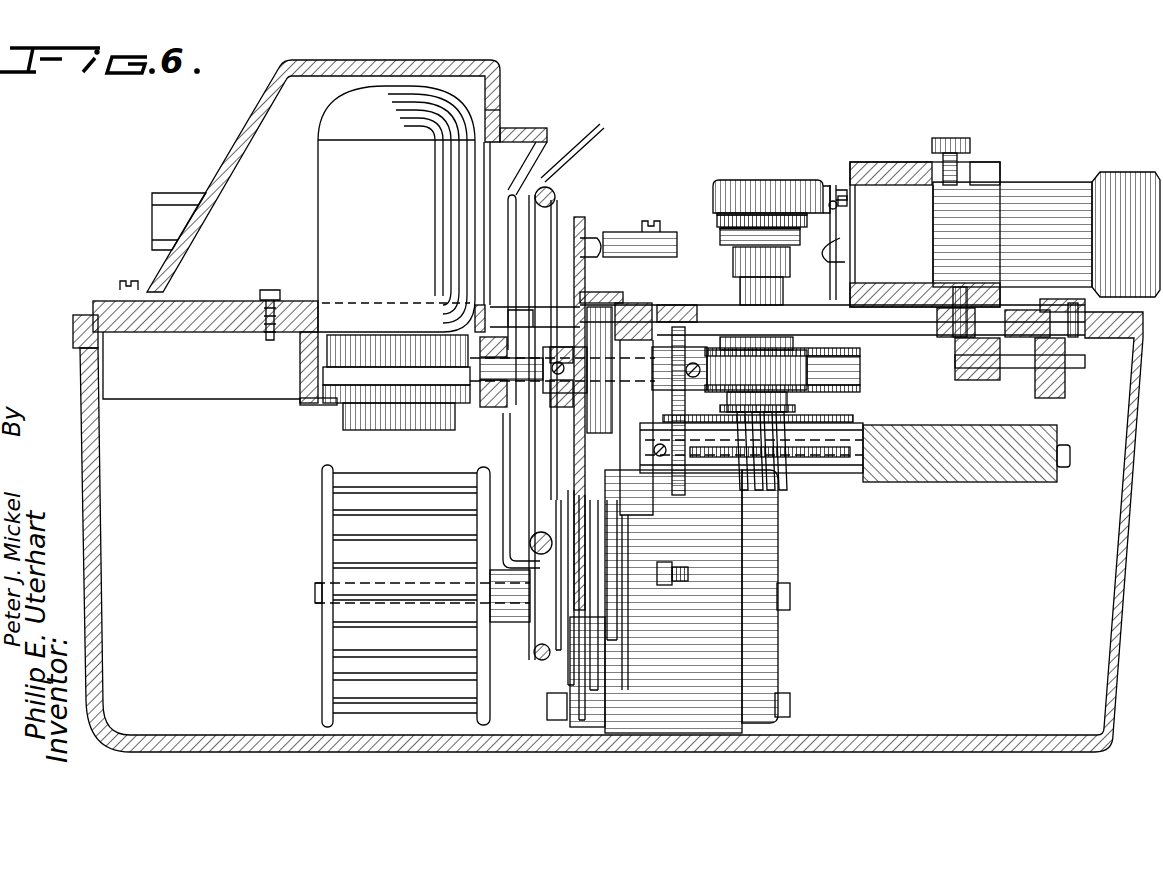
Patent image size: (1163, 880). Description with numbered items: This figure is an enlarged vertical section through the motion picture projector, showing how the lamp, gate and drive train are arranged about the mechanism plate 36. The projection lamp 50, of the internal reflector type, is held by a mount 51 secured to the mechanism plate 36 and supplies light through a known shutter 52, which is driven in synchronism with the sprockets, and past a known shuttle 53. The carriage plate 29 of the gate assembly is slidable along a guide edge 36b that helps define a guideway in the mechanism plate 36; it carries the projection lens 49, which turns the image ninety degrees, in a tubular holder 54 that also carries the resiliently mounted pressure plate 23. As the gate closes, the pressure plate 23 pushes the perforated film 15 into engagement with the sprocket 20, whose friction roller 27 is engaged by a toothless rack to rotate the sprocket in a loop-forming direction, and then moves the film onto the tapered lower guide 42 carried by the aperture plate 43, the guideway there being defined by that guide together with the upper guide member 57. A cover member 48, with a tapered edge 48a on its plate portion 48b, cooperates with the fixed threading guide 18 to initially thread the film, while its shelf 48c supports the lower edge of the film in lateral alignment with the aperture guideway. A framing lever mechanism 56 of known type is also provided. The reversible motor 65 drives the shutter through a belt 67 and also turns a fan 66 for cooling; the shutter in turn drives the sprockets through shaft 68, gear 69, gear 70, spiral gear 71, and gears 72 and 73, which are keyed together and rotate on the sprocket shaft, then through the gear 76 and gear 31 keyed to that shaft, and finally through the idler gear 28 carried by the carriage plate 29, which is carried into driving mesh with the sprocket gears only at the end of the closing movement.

The perforated film 15 is at (832, 213).
The threading guide 18 is at (838, 200).
The sprocket 20 is at (765, 218).
The pressure plate 23 is at (835, 190).
The friction roller 27 is at (745, 270).
The idler gear 28 is at (975, 368).
The carriage plate 29 is at (997, 340).
The gear 31 is at (837, 345).
The mechanism plate 36 is at (230, 323).
The guide edge 36b is at (900, 322).
The tapered lower guide 42 is at (598, 245).
The aperture plate 43 is at (578, 172).
The cover member 48 is at (725, 188).
The tapered edge 48a is at (827, 210).
The plate portion 48b is at (753, 183).
The shelf 48c is at (842, 238).
The projection lens 49 is at (1062, 200).
The projection lamp 50 is at (322, 194).
The lamp mount 51 is at (298, 363).
The shutter 52 is at (557, 233).
The shuttle 53 is at (580, 240).
The tubular holder 54 is at (890, 165).
The framing lever mechanism 56 is at (510, 510).
The upper guide member 57 is at (583, 222).
The reversible motor 65 is at (762, 542).
The fan 66 is at (345, 548).
The belt 67 is at (535, 658).
The shaft 68 is at (487, 405).
The gear 69 is at (690, 303).
The gear 70 is at (680, 497).
The spiral gear 71 is at (747, 467).
The gear 72 is at (870, 428).
The gear 73 is at (847, 420).
The gear 76 is at (848, 384).